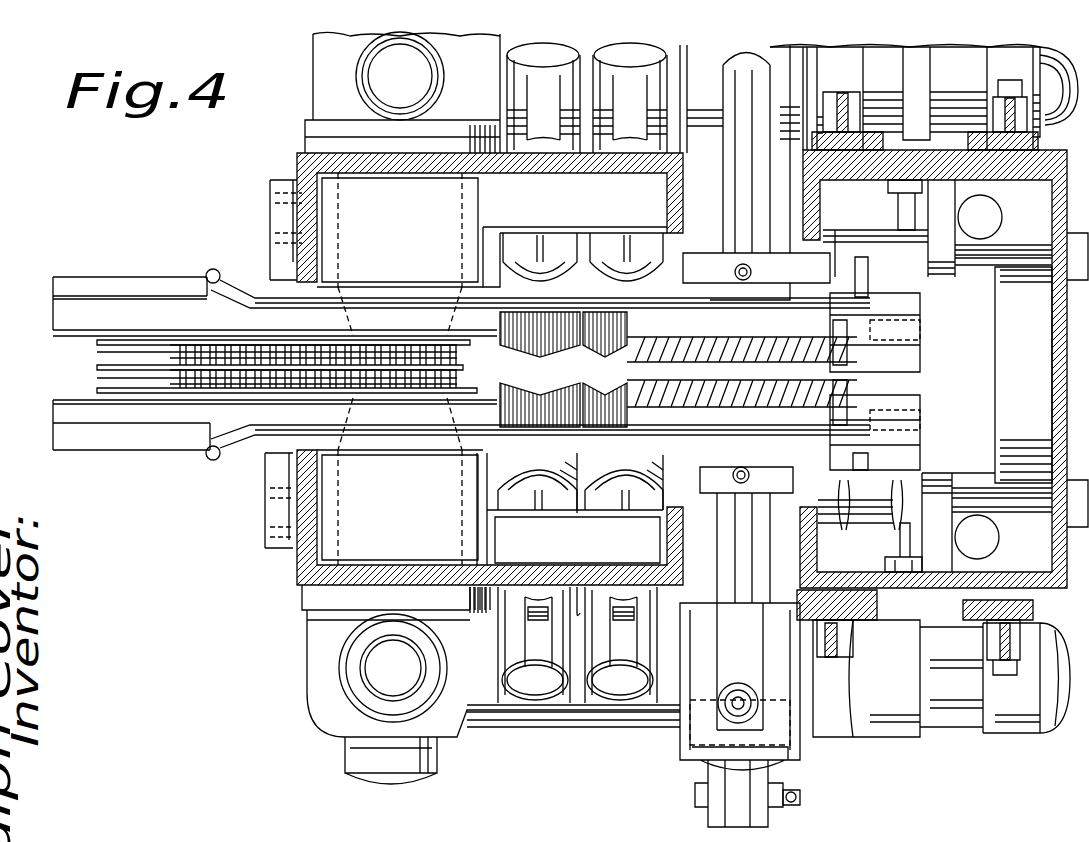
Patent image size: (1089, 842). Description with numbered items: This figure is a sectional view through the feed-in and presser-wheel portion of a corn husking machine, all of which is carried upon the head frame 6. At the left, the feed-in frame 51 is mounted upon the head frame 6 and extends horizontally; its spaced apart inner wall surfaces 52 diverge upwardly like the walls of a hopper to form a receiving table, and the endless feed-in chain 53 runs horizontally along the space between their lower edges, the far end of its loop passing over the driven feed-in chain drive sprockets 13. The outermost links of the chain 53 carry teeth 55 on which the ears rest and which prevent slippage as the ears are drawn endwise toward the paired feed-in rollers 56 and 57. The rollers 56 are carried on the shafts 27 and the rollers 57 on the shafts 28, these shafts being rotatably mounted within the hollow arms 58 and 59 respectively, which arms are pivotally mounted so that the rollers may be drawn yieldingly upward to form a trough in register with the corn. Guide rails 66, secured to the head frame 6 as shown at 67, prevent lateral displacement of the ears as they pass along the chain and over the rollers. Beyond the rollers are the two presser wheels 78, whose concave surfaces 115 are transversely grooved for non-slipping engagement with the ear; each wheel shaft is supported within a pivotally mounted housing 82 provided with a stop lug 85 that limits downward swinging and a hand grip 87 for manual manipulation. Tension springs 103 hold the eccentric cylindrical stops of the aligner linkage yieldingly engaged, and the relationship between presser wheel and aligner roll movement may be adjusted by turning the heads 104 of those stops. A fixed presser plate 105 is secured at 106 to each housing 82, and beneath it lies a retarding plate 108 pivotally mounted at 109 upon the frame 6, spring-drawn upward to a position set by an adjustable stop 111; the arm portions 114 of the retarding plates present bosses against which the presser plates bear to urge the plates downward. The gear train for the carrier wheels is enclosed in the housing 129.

The head frame 6 is at (291, 575).
The feed-in chain drive sprockets 13 is at (465, 350).
The feed-in roll drive shaft 27 is at (527, 235).
The feed-in roll drive shaft 28 is at (607, 235).
The frame 51 is at (173, 453).
The inner wall surfaces 52 is at (175, 290).
The endless feed-in chain 53 is at (97, 358).
The teeth 55 is at (240, 387).
The feed-in rollers 56 is at (505, 305).
The feed-in rollers 57 is at (608, 395).
The hollow arm 58 is at (520, 80).
The hollow arm 59 is at (650, 100).
The guide rails 66 is at (368, 290).
The securing point 67 is at (273, 200).
The presser wheels 78 is at (850, 330).
The housings 82 is at (690, 555).
The stop lugs 85 is at (745, 625).
The hand grips 87 is at (730, 708).
The tension springs 103 is at (795, 790).
The heads 104 is at (698, 793).
The presser plate 105 is at (920, 330).
The fixing point 106 is at (742, 262).
The retarding plates 108 is at (920, 360).
The pivotal mounting 109 is at (990, 252).
The adjustable stops 111 is at (898, 213).
The arm portions 114 is at (900, 282).
The concave surfaces 115 is at (760, 367).
The housing 129 is at (878, 705).